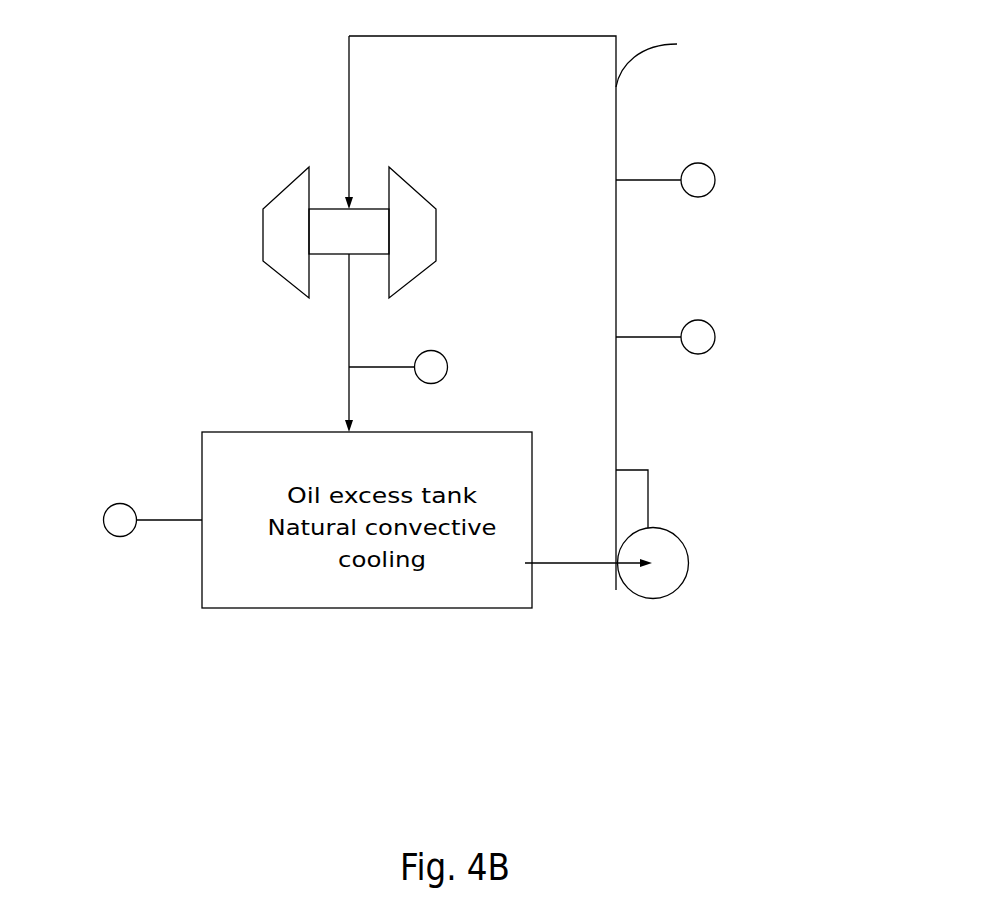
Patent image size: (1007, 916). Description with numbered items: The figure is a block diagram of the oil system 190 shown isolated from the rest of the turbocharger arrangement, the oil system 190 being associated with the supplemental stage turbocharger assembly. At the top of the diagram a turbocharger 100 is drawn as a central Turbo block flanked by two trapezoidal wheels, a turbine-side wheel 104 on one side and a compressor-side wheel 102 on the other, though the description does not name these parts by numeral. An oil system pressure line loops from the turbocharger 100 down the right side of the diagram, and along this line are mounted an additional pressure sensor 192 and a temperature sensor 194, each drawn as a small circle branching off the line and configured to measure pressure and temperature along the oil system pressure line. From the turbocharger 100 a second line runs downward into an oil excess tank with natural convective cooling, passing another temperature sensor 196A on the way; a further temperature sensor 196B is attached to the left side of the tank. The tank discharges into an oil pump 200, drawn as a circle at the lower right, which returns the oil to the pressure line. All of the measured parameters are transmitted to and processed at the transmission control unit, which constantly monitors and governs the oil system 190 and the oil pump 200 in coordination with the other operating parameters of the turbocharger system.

The turbocharger 100 is at (358, 167).
The compressor 102 is at (414, 198).
The turbine 104 is at (294, 190).
The oil system 190 is at (737, 499).
The pressure sensor 192 is at (716, 182).
The temperature sensor 194 is at (716, 339).
The temperature sensor 196A is at (447, 368).
The temperature sensor 196B is at (108, 527).
The oil pump 200 is at (675, 580).